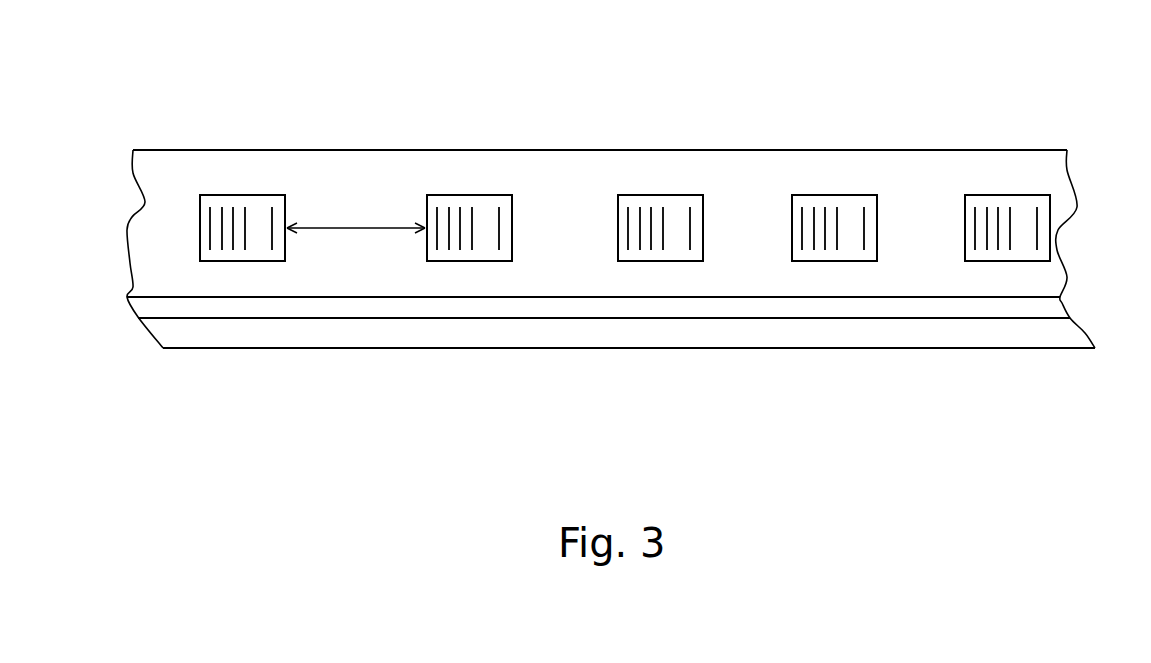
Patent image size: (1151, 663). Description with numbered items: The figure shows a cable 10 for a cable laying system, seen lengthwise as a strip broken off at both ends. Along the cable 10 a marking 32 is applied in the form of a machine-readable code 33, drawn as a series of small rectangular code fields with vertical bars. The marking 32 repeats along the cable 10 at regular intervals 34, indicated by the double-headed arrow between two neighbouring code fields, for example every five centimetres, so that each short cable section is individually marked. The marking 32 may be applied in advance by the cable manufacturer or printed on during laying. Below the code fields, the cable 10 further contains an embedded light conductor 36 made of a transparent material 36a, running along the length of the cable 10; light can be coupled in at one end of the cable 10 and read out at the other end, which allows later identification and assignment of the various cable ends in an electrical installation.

The cable 10 is at (611, 184).
The marking 32 is at (207, 222).
The machine-readable code 33 is at (223, 207).
The regular intervals 34 is at (358, 228).
The light conductor 36 is at (595, 307).
The transparent material 36a is at (723, 307).